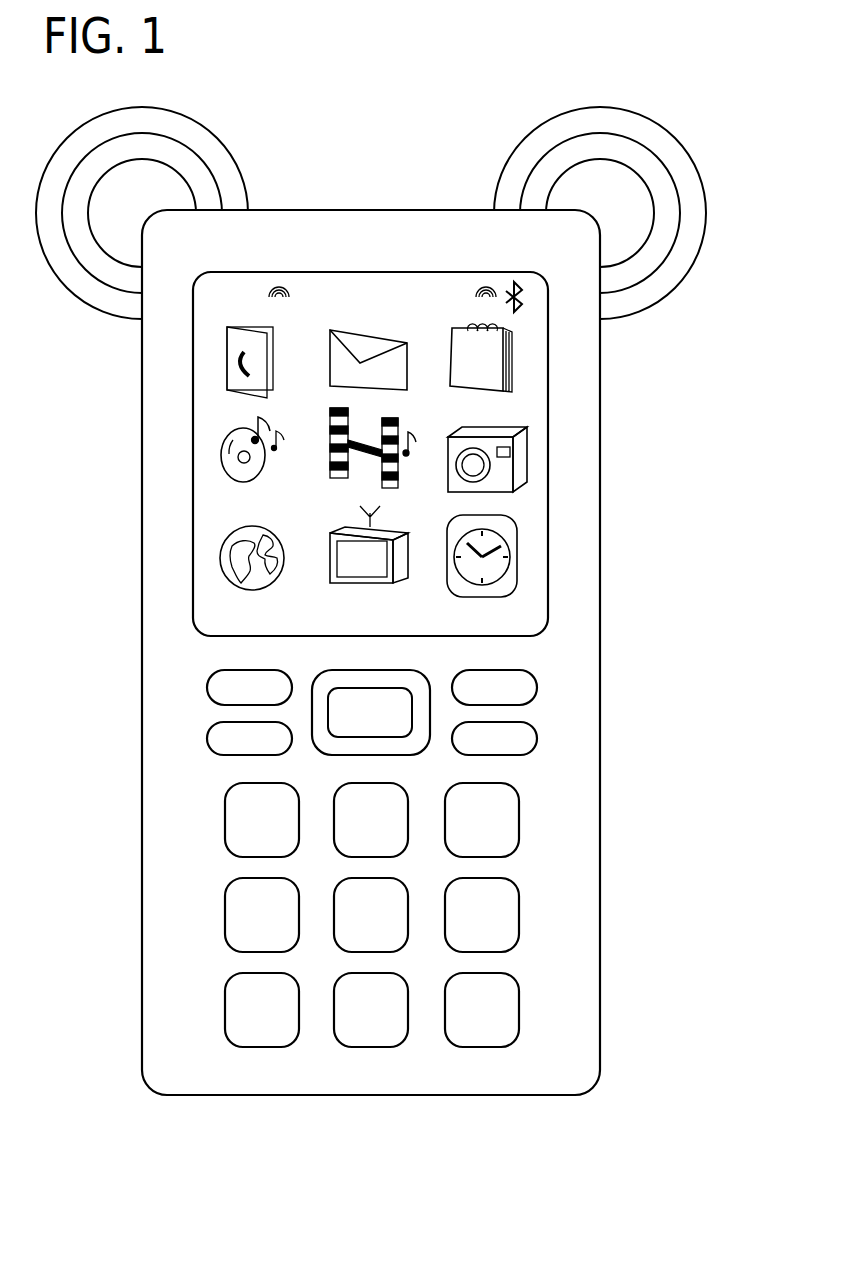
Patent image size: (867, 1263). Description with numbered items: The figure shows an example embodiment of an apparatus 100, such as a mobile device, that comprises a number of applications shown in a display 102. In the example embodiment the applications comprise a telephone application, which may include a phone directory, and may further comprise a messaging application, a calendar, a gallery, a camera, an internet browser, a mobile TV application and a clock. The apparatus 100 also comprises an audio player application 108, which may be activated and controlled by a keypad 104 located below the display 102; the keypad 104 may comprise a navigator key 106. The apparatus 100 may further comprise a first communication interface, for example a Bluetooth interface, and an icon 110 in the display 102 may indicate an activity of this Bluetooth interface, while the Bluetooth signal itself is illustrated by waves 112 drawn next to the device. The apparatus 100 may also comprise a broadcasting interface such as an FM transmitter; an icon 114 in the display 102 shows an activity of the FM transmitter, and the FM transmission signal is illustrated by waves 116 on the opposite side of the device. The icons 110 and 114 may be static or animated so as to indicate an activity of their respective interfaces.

The apparatus 100 is at (198, 1138).
The display 102 is at (548, 518).
The keypad 104 is at (522, 825).
The navigator key 106 is at (402, 676).
The audio player application 108 is at (222, 455).
The icon 110 is at (528, 294).
The waves 112 is at (690, 137).
The icon 114 is at (203, 288).
The waves 116 is at (225, 134).